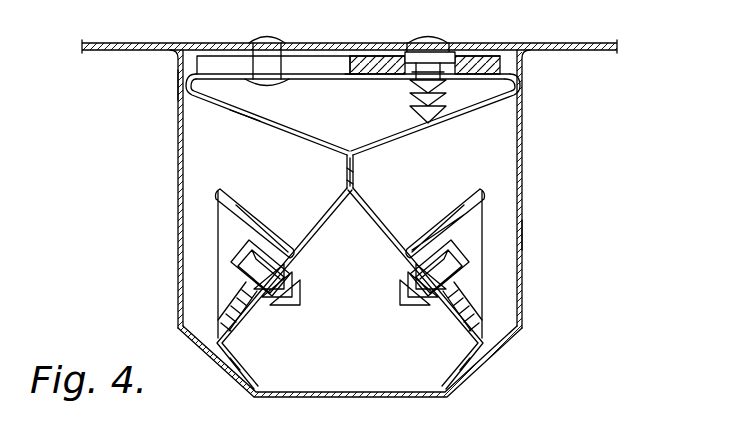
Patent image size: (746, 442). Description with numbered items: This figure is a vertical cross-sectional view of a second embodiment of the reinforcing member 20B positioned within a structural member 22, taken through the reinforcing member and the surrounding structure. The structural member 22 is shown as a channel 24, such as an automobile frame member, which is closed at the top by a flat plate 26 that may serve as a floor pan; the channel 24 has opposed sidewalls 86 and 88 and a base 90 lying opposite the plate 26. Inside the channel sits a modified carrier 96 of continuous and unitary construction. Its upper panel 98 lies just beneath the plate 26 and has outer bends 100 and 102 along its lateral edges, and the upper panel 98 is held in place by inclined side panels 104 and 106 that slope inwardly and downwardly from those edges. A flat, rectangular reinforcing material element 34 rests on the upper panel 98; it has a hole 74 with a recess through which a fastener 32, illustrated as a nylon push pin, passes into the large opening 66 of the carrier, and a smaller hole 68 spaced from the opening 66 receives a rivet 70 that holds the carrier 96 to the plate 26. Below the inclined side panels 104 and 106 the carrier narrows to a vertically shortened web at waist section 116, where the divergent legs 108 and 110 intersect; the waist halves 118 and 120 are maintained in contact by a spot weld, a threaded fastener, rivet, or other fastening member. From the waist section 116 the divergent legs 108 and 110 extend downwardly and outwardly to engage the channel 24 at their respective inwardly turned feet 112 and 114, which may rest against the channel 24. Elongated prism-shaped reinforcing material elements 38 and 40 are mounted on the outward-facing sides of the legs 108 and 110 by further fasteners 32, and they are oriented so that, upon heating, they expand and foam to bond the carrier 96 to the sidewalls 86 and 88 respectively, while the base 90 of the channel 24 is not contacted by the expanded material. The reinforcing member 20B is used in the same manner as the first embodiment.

The reinforcing member 20B is at (347, 236).
The structural member 22 is at (172, 283).
The channel 24 is at (525, 237).
The flat plate 26 is at (536, 44).
The fastener 32 is at (428, 118).
The reinforcing material element 34 is at (368, 63).
The reinforcing material element 38 is at (441, 220).
The reinforcing material element 40 is at (237, 215).
The opening 66 is at (445, 78).
The hole 68 is at (281, 72).
The rivet 70 is at (278, 38).
The hole 74 is at (448, 72).
The sidewall 86 is at (525, 172).
The sidewall 88 is at (178, 193).
The base 90 is at (352, 393).
The modified carrier 96 is at (247, 120).
The upper panel 98 is at (366, 80).
The outer bend 100 is at (527, 78).
The outer bend 102 is at (178, 88).
The inclined side panel 104 is at (419, 133).
The inclined side panel 106 is at (276, 133).
The divergent leg 108 is at (380, 230).
The divergent leg 110 is at (313, 232).
The inwardly turned foot 112 is at (457, 377).
The inwardly turned foot 114 is at (232, 371).
The waist section 116 is at (348, 182).
The waist half 118 is at (352, 173).
The waist half 120 is at (347, 170).